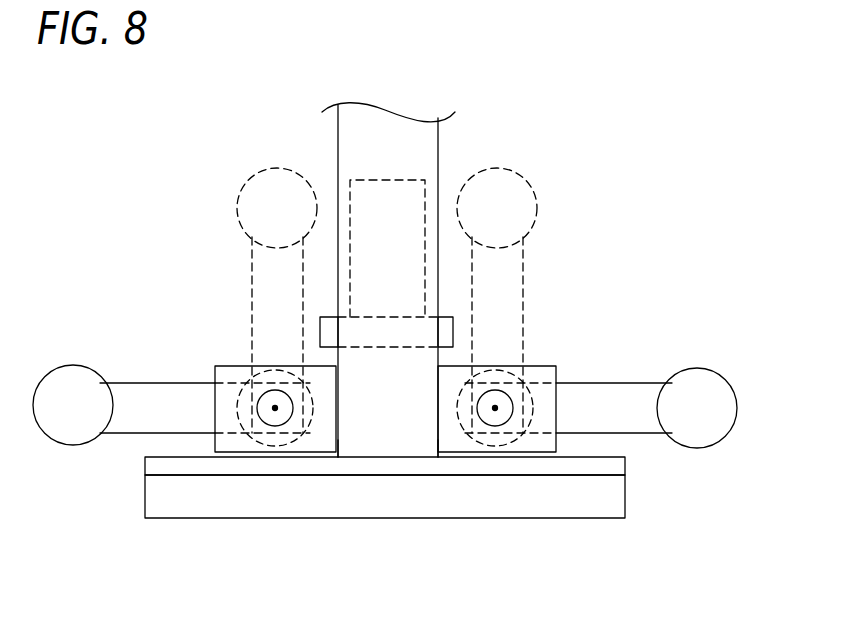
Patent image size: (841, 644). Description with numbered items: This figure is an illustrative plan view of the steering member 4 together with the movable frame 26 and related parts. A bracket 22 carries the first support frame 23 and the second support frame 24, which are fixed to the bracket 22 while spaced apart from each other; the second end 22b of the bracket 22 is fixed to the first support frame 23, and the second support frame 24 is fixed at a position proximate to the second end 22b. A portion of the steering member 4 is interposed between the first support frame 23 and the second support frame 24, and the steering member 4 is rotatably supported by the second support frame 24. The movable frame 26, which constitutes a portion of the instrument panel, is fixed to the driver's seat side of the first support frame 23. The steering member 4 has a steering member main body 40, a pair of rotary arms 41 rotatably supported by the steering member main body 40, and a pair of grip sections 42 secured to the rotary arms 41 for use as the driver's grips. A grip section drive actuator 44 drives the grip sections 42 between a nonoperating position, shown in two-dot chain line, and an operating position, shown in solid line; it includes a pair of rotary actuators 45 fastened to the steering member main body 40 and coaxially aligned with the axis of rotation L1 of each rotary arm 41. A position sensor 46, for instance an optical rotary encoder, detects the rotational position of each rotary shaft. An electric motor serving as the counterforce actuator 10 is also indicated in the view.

The steering member 4 is at (215, 366).
The counterforce actuator 10 is at (388, 180).
The bracket 22 is at (345, 138).
The second end of the bracket 22b is at (383, 430).
The first support frame 23 is at (616, 464).
The second support frame 24 is at (452, 328).
The movable frame 26 is at (616, 498).
The steering member main body 40 is at (232, 443).
The rotary arm 41 is at (258, 270).
The grip section 42 is at (258, 185).
The grip section drive actuator 44 is at (531, 424).
The rotary actuator 45 is at (263, 446).
The position sensor 46 is at (268, 393).
The axis of rotation L1 is at (275, 408).